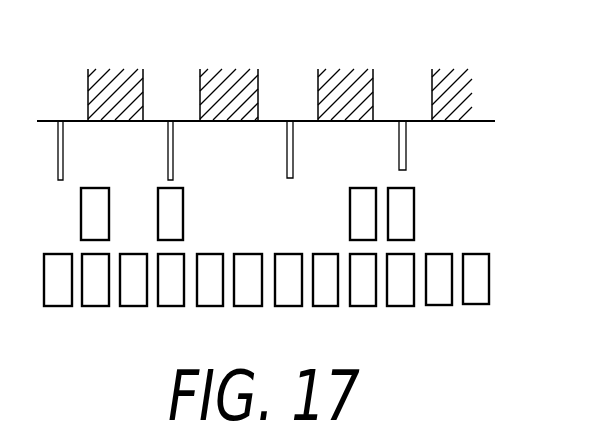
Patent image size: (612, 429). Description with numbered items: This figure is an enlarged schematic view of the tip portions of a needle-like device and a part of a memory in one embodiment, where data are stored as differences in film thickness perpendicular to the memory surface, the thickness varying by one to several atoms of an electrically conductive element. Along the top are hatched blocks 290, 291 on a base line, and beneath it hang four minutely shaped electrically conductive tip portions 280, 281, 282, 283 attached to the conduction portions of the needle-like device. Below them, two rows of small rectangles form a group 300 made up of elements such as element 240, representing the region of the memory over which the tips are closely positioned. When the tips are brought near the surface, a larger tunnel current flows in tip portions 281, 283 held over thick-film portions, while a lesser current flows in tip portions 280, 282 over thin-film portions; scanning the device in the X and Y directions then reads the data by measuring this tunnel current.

The hatched block 290 is at (113, 87).
The hatched block edge 291 is at (182, 73).
The electrically conductive tip portion 280 is at (65, 157).
The electrically conductive tip portion 281 is at (175, 157).
The electrically conductive tip portion 282 is at (295, 158).
The electrically conductive tip portion 283 is at (408, 157).
The array of elements 300 is at (503, 183).
The element 240 is at (472, 305).